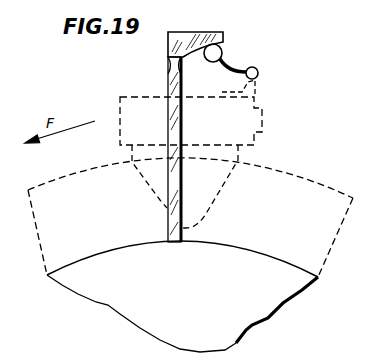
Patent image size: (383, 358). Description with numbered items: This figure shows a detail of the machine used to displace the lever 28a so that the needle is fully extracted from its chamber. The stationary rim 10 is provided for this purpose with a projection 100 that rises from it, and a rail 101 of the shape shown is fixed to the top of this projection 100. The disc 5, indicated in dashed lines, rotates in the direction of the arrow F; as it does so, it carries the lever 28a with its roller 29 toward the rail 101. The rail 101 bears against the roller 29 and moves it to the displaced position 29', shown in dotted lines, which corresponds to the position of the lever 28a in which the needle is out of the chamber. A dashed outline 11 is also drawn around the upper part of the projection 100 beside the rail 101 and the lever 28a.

The rail 101 is at (200, 32).
The roller 29 is at (241, 43).
The roller position 29' is at (151, 62).
The lever 28a is at (243, 69).
The housing 11 is at (132, 108).
The projection 100 is at (167, 193).
The disc 5 is at (330, 191).
The stationary rim 10 is at (262, 303).